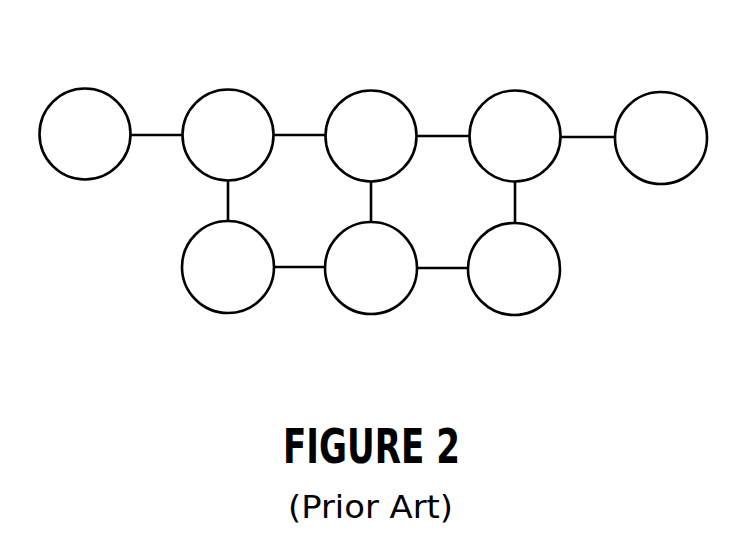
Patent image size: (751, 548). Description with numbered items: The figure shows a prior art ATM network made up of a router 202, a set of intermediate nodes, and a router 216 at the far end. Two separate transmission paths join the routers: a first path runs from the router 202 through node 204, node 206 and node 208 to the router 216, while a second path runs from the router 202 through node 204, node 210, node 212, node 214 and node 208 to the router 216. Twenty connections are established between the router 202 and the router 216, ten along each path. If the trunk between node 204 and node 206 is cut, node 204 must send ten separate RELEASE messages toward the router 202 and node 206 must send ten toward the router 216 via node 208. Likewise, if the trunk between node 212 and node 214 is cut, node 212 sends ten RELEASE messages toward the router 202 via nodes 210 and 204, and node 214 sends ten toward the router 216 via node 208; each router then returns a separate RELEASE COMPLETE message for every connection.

The router 202 is at (83, 89).
The node 204 is at (226, 90).
The node 206 is at (369, 91).
The node 208 is at (514, 91).
The node 210 is at (183, 265).
The node 212 is at (371, 315).
The node 214 is at (560, 268).
The router 216 is at (659, 92).